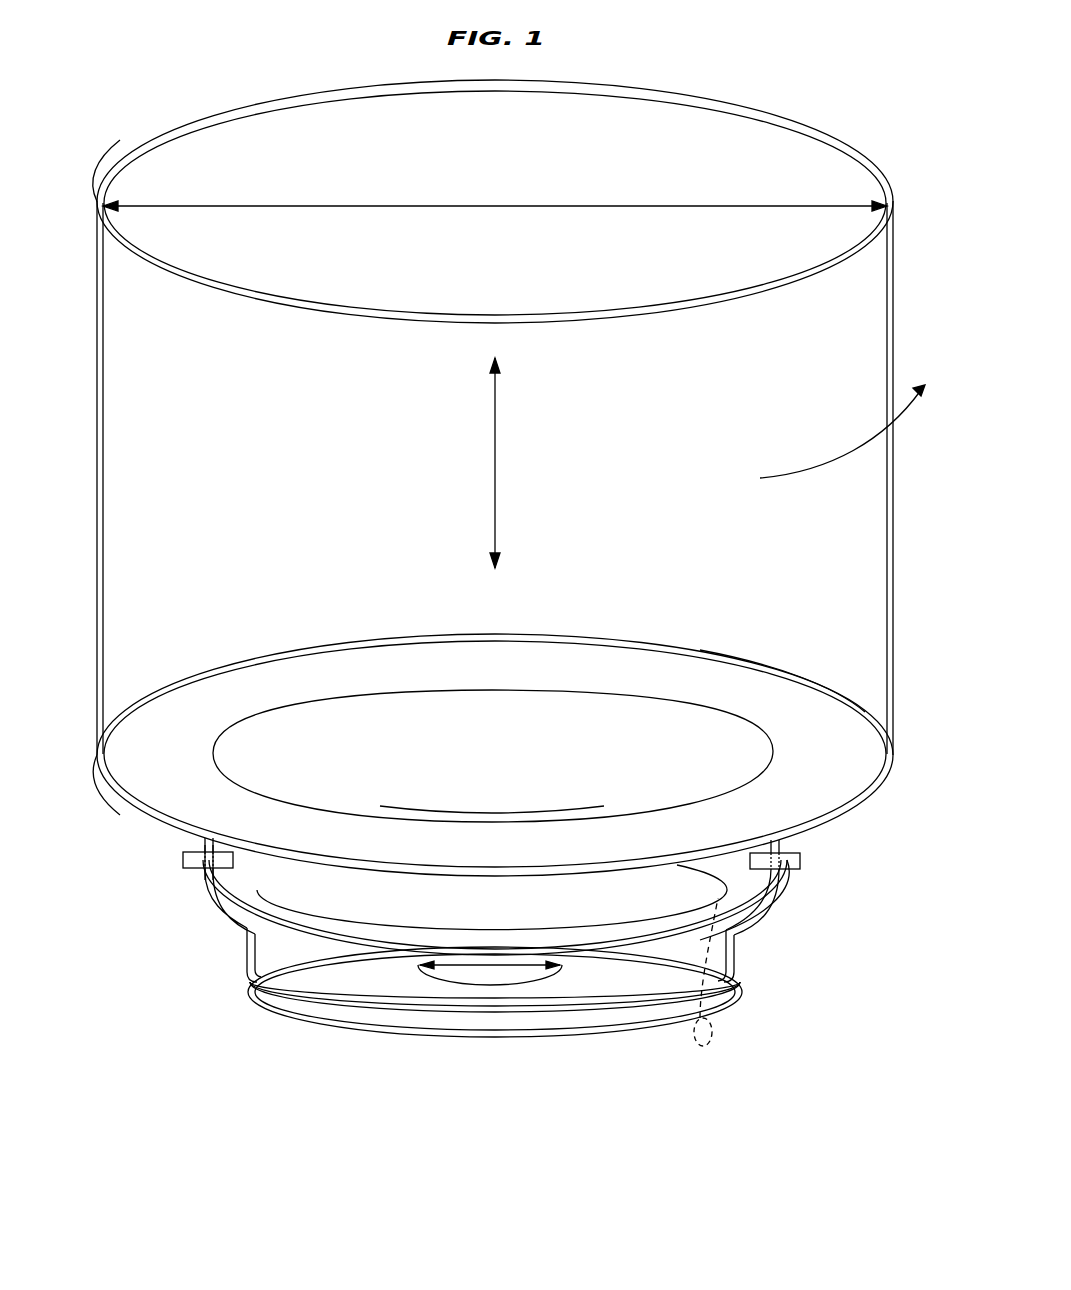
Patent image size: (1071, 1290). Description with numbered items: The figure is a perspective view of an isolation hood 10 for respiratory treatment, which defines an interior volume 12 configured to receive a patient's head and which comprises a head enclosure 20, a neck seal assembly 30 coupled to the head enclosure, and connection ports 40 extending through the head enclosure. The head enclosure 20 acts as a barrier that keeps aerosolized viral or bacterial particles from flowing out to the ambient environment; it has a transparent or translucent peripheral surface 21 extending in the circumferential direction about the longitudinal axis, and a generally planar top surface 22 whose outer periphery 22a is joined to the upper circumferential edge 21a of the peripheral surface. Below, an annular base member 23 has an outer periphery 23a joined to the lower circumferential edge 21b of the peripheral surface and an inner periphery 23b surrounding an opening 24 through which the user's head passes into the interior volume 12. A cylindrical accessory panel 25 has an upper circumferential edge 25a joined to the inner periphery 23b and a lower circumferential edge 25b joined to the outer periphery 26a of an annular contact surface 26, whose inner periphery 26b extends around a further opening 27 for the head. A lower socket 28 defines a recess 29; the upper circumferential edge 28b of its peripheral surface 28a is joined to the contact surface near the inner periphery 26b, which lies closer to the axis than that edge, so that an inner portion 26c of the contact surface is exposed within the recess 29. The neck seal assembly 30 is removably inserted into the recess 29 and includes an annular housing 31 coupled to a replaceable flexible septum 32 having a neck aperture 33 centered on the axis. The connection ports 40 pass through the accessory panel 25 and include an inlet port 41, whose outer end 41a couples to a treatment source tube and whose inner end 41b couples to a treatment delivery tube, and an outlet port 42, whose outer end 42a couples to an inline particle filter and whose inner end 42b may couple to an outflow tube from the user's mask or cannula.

The isolation hood 10 is at (112, 56).
The interior volume 12 is at (327, 515).
The head enclosure 20 is at (97, 345).
The peripheral surface 21 is at (97, 431).
The upper circumferential edge 21a is at (97, 205).
The lower circumferential edge 21b is at (97, 760).
The top surface 22 is at (272, 128).
The outer periphery 22a is at (360, 97).
The annular base member 23 is at (173, 710).
The outer periphery 23a is at (130, 710).
The inner periphery 23b is at (735, 720).
The opening 24 is at (345, 748).
The accessory panel 25 is at (184, 858).
The upper circumferential edge 25a is at (210, 848).
The lower circumferential edge 25b is at (200, 873).
The annular contact surface 26 is at (757, 920).
The outer periphery 26a is at (770, 907).
The inner periphery 26b is at (753, 930).
The inner portion 26c is at (702, 1046).
The opening 27 is at (393, 917).
The lower socket 28 is at (245, 960).
The peripheral surface 28a is at (288, 998).
The upper circumferential edge 28b is at (740, 987).
The recess 29 is at (600, 1020).
The neck seal assembly 30 is at (335, 1010).
The annular housing 31 is at (340, 1034).
The flexible septum 32 is at (405, 990).
The neck aperture 33 is at (508, 980).
The connection ports 40 is at (183, 864).
The inlet port 41 is at (223, 868).
The outer end 41a is at (182, 866).
The inner end 41b is at (218, 895).
The outlet port 42 is at (787, 873).
The outer end 42a is at (800, 857).
The inner end 42b is at (790, 888).